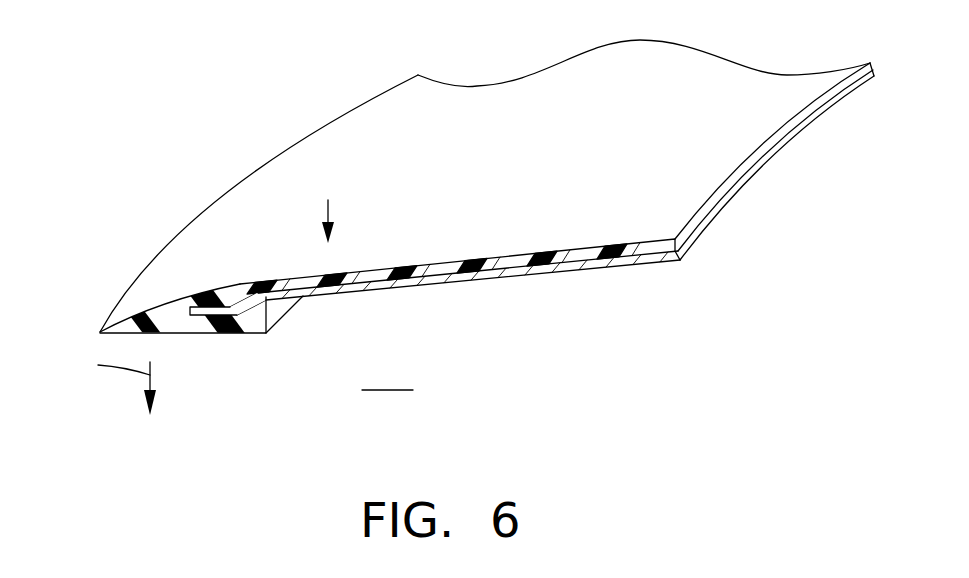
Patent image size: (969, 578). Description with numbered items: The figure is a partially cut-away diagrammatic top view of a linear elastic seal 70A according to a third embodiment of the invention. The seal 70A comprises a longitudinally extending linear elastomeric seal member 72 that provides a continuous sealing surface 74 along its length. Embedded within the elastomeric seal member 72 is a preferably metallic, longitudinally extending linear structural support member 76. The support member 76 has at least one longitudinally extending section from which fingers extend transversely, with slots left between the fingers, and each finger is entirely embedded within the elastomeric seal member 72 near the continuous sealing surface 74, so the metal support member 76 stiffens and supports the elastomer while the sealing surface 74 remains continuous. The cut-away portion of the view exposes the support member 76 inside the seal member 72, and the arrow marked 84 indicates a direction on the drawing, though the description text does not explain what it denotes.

The linear elastic seal 70A is at (476, 227).
The linear elastomeric seal member 72 is at (423, 193).
The continuous sealing surface 74 is at (187, 335).
The linear structural support member 76 is at (570, 268).
The direction arrow (incident flow) 84 is at (328, 204).